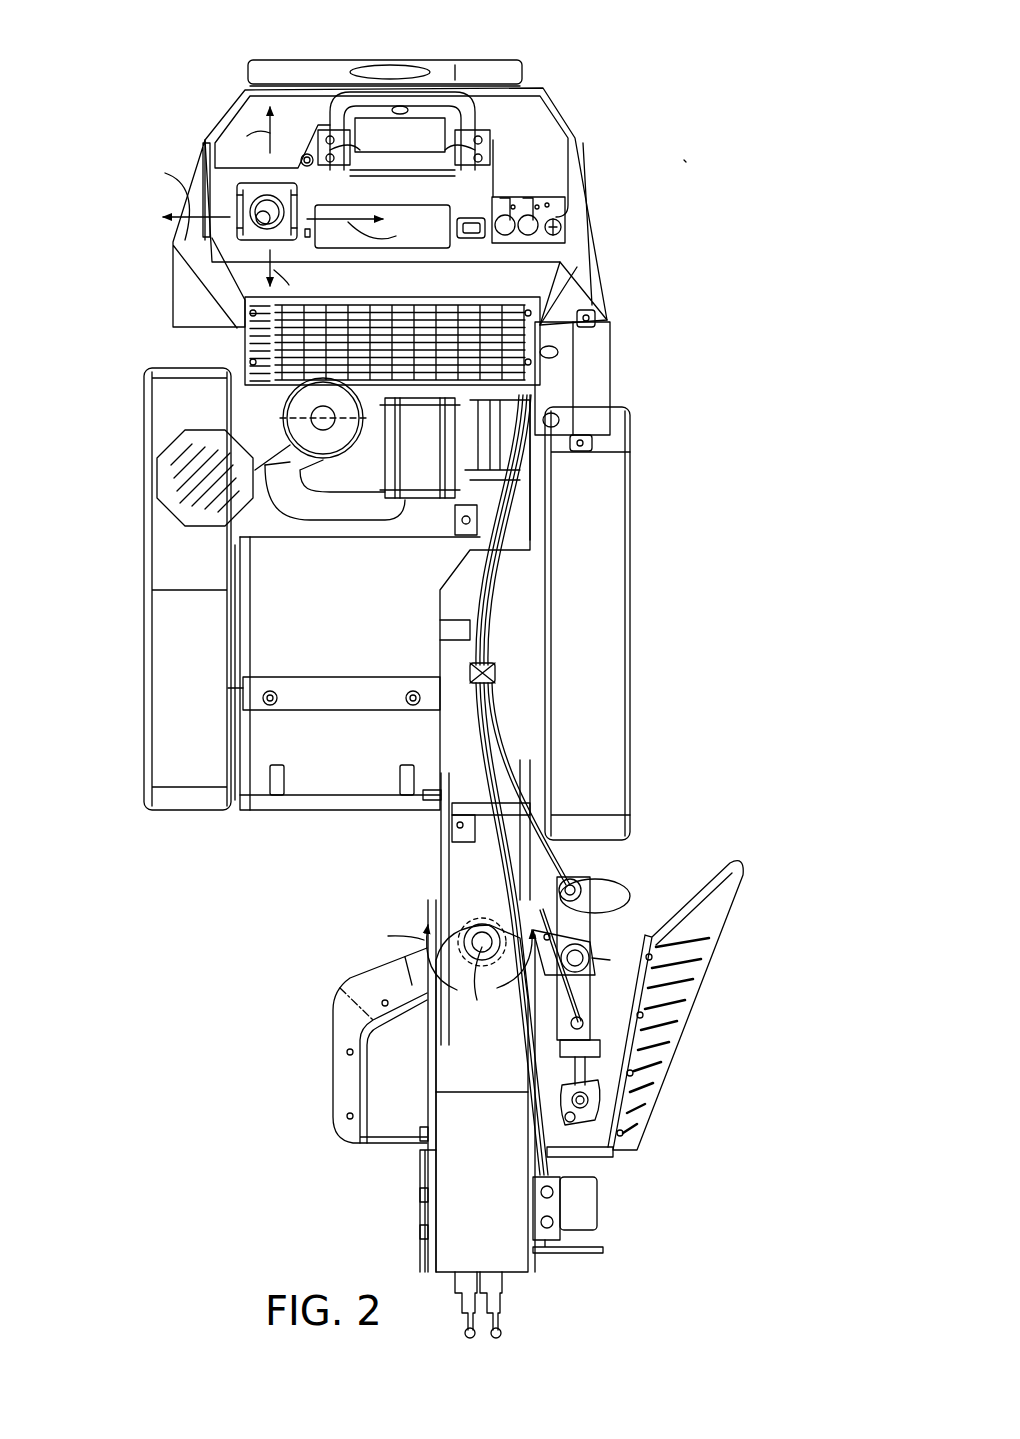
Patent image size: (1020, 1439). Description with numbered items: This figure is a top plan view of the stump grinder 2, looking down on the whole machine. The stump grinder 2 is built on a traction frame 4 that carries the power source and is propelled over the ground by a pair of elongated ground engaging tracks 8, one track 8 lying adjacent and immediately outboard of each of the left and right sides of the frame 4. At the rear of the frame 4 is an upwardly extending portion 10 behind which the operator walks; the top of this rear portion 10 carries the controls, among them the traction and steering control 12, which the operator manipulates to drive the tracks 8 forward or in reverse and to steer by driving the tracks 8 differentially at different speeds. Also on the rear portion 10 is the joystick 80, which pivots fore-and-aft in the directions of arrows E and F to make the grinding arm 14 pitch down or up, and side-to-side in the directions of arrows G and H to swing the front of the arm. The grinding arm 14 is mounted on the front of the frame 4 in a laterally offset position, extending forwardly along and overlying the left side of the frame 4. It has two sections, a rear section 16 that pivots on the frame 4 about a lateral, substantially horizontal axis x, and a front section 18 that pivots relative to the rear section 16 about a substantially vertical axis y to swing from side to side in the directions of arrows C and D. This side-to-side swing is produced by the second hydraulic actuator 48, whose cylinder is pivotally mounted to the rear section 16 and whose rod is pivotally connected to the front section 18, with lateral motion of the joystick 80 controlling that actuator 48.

The stump grinder 2 is at (687, 157).
The traction frame 4 is at (313, 748).
The ground engaging tracks 8 is at (595, 559).
The upwardly extending portion 10 is at (563, 107).
The traction and steering control 12 is at (415, 80).
The grinding arm 14 is at (428, 899).
The rear section 16 is at (447, 857).
The front section 18 is at (428, 1160).
The second hydraulic actuator 48 is at (612, 922).
The joystick 80 is at (242, 189).